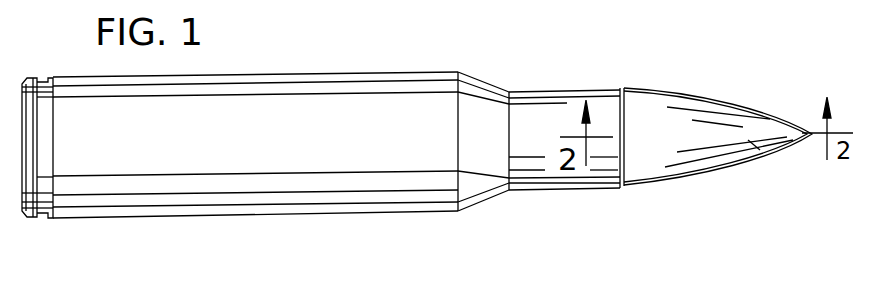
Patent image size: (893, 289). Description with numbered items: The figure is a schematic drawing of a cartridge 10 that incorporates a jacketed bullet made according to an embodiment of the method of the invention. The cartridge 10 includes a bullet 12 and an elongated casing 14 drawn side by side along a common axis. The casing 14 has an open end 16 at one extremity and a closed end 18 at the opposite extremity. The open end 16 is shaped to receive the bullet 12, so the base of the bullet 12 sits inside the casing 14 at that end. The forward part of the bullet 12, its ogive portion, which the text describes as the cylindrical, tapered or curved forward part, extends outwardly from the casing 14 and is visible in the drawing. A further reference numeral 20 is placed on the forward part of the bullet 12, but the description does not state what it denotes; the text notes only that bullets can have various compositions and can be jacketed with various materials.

The cartridge 10 is at (536, 220).
The bullet 12 is at (683, 95).
The casing 14 is at (352, 73).
The open end 16 is at (610, 104).
The closed end 18 is at (76, 86).
The bullet jacket 20 is at (754, 148).